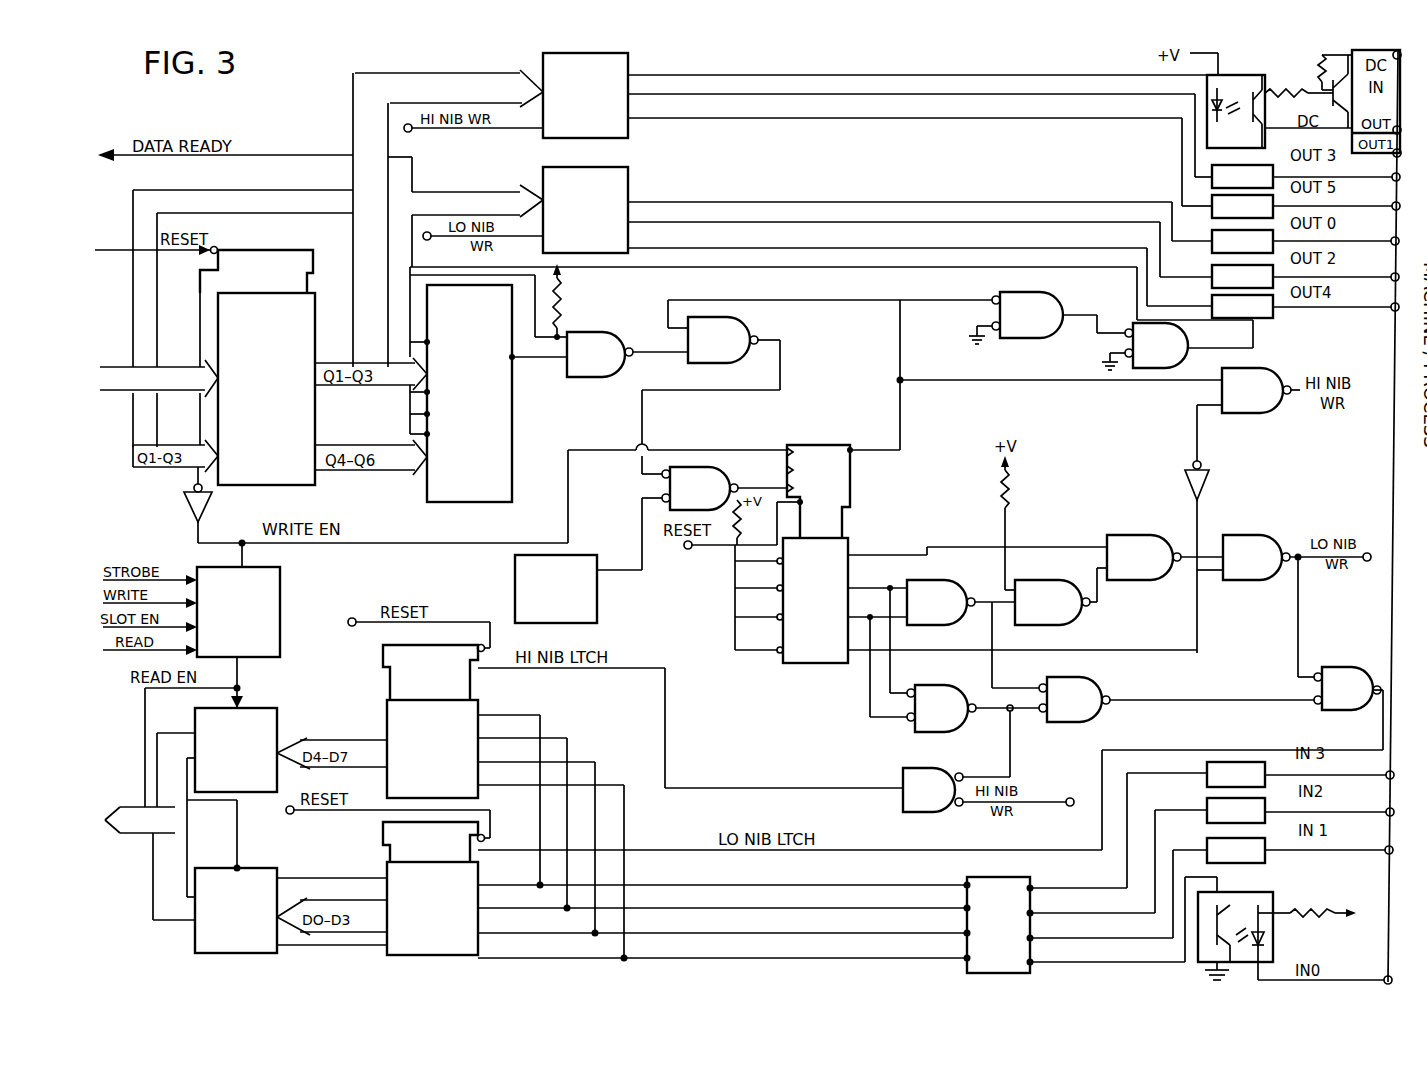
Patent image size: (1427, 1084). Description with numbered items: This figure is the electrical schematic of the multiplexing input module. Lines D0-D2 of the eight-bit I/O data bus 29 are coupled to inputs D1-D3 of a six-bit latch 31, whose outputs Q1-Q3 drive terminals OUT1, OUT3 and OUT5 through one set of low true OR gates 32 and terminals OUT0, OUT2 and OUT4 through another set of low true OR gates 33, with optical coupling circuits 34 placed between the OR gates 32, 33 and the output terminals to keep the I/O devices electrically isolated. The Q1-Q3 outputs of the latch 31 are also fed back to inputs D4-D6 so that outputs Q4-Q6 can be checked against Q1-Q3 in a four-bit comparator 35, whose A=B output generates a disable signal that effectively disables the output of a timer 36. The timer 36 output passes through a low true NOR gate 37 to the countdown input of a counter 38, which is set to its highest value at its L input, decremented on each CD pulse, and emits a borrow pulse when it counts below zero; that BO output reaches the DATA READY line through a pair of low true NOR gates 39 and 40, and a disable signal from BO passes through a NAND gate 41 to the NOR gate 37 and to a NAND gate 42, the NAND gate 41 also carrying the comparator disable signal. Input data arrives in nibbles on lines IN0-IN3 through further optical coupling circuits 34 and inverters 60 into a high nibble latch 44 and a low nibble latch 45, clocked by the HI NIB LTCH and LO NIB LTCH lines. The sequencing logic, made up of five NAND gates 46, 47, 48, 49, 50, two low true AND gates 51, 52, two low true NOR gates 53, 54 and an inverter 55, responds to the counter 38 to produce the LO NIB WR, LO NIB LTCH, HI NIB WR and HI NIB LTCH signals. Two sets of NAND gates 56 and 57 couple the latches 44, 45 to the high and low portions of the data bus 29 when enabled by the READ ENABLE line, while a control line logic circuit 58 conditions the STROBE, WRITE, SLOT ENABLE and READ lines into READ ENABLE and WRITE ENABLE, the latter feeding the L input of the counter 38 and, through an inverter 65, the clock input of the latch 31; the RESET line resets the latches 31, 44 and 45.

The I/O data bus 29 is at (112, 366).
The six-bit latch 31 is at (267, 421).
The low true OR gates 32 is at (596, 130).
The low true OR gates 33 is at (596, 244).
The optical coupling circuits 34 is at (1212, 205).
The four-bit comparator 35 is at (480, 495).
The timer 36 is at (600, 592).
The low true NOR gate 37 is at (705, 498).
The counter 38 is at (848, 540).
The low true NOR gate 39 is at (1040, 324).
The low true NOR gate 40 is at (1169, 354).
The NAND gate 41 is at (724, 347).
The NAND gate 42 is at (602, 362).
The high nibble latch 44 is at (480, 690).
The low nibble latch 45 is at (480, 865).
The NAND gate 46 is at (941, 611).
The NAND gate 47 is at (1051, 611).
The NAND gate 48 is at (1144, 566).
The NAND gate 49 is at (1257, 566).
The NAND gate 50 is at (1256, 399).
The low true AND gate 51 is at (946, 717).
The low true AND gate 52 is at (1079, 709).
The low true NOR gate 53 is at (1353, 698).
The low true NOR gate 54 is at (934, 799).
The inverter 55 is at (1210, 480).
The NAND gates 56 is at (280, 712).
The NAND gates 57 is at (280, 872).
The control line logic circuit 58 is at (282, 584).
The inverters 60 is at (1032, 882).
The inverter 65 is at (184, 506).